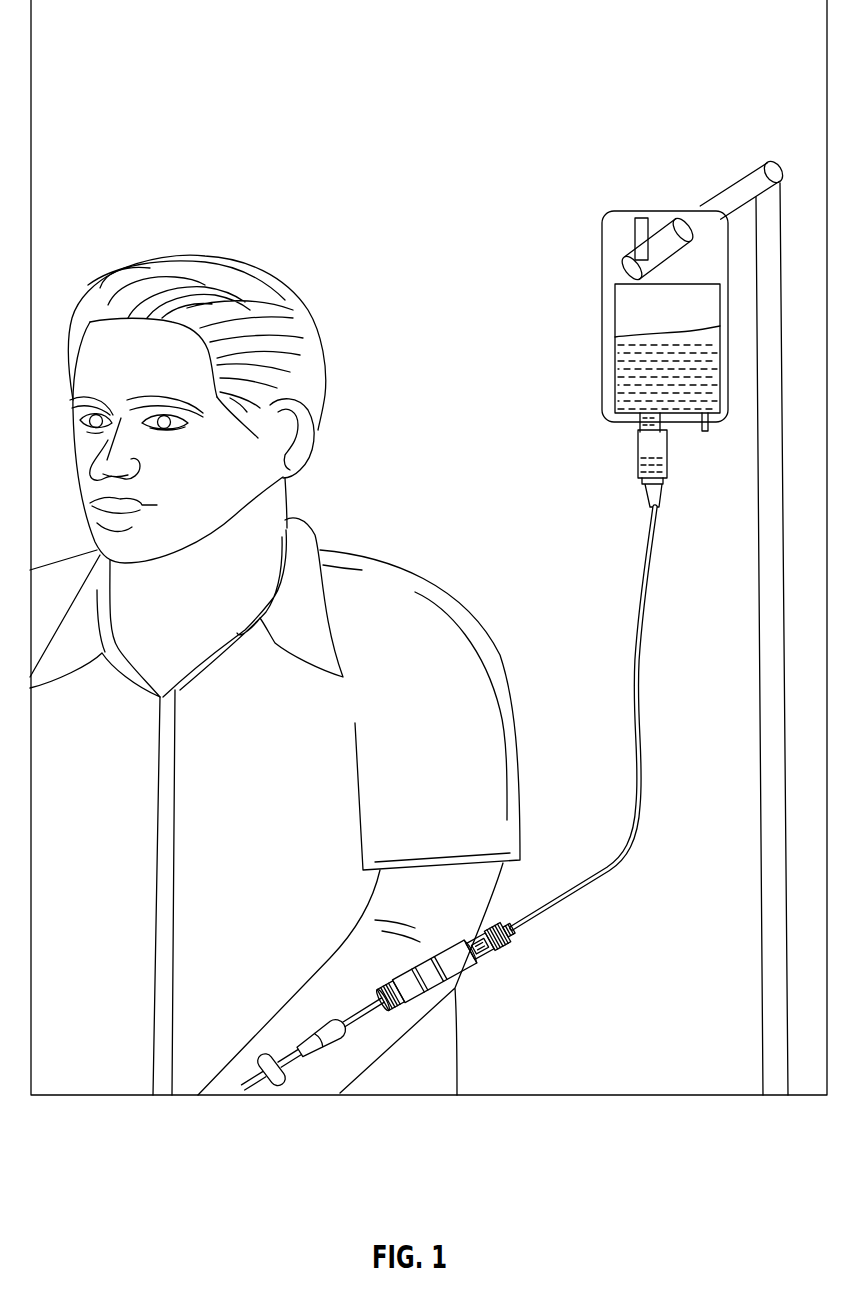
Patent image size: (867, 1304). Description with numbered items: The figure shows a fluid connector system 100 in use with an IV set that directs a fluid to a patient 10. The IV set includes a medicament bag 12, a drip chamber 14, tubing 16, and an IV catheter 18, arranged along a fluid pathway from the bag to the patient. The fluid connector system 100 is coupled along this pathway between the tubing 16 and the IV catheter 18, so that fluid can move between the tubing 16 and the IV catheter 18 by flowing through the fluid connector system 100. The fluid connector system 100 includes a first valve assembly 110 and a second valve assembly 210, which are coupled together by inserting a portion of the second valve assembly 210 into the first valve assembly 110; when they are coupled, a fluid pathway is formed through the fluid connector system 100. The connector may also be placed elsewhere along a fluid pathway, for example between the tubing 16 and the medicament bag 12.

The patient 10 is at (411, 558).
The medicament bag 12 is at (602, 316).
The drip chamber 14 is at (637, 441).
The tubing 16 is at (645, 548).
The IV catheter 18 is at (287, 1057).
The fluid connector system 100 is at (449, 965).
The first valve assembly 110 is at (357, 924).
The second valve assembly 210 is at (442, 958).